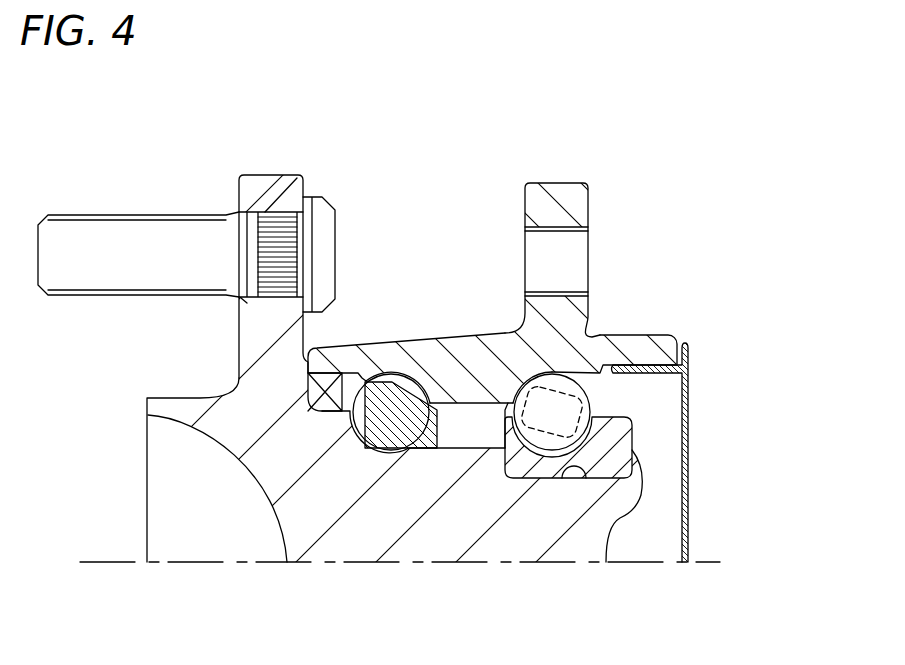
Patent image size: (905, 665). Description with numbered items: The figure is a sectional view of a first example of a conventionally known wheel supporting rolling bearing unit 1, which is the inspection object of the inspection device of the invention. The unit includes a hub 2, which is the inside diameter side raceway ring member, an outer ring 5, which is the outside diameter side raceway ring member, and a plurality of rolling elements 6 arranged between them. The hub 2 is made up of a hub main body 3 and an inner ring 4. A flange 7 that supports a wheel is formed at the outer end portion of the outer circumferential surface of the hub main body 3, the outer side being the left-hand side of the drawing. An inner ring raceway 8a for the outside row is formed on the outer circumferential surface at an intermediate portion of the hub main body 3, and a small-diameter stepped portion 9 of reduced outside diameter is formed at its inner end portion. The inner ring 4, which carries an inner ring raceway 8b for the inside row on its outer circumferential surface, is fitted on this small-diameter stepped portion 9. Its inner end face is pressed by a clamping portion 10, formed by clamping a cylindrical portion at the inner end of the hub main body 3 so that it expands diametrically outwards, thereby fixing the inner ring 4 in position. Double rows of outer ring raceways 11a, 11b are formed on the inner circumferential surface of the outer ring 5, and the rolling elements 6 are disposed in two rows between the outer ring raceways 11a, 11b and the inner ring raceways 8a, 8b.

The wheel supporting rolling bearing unit 1 is at (415, 225).
The hub 2 is at (228, 418).
The hub main body 3 is at (280, 468).
The inner ring 4 is at (683, 452).
The outer ring 5 is at (465, 353).
The rolling elements 6 is at (389, 373).
The flange 7 is at (268, 190).
The inner ring raceway for outside row 8a is at (368, 440).
The inner ring raceway for inside row 8b is at (630, 427).
The small-diameter stepped portion 9 is at (587, 478).
The clamping portion 10 is at (630, 472).
The outer ring raceway 11a is at (406, 372).
The outer ring raceway 11b is at (545, 378).